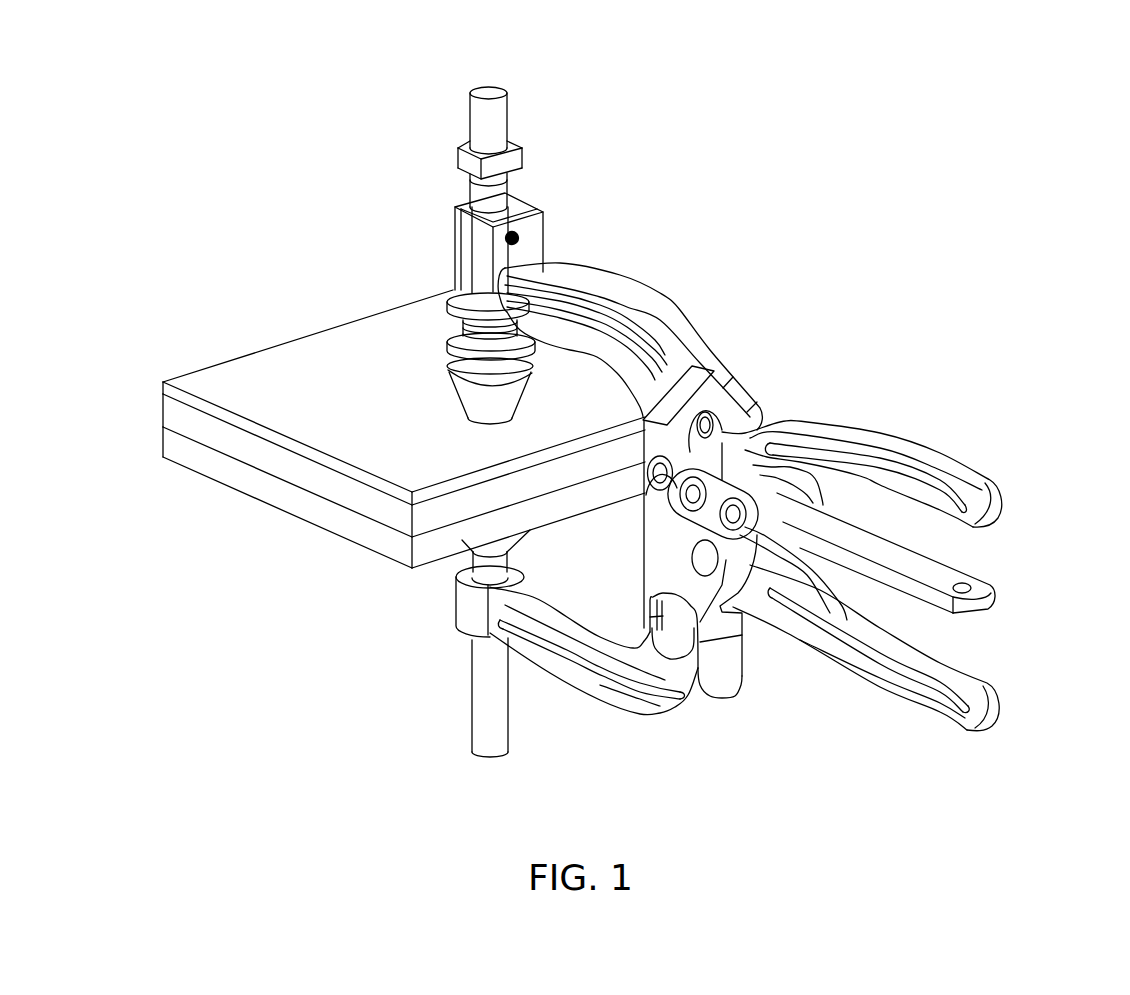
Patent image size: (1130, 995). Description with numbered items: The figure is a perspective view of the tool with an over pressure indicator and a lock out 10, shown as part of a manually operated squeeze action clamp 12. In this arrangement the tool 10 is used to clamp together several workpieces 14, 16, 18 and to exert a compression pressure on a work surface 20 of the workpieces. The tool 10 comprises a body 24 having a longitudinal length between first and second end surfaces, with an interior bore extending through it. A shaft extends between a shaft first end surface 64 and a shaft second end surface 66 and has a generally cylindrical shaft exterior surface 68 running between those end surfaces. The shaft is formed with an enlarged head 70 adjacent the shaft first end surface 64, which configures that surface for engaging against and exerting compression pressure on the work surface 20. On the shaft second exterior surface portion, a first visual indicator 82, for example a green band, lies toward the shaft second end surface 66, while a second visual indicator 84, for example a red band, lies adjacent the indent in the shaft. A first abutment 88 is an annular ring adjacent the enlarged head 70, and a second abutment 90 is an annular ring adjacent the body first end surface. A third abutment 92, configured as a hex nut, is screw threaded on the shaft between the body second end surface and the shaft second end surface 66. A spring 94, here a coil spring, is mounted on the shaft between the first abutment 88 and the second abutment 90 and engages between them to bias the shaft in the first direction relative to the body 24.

The tool with an over pressure indicator and a lock out 10 is at (506, 78).
The manually operated squeeze action clamp 12 is at (1010, 690).
The workpiece 14 is at (172, 390).
The workpiece 16 is at (183, 415).
The workpiece 18 is at (172, 443).
The work surface 20 is at (213, 380).
The body 24 is at (535, 247).
The shaft first end surface 64 is at (478, 425).
The shaft second end surface 66 is at (487, 92).
The shaft exterior surface 68 is at (503, 123).
The enlarged head 70 is at (463, 395).
The first visual indicator 82 is at (503, 190).
The second visual indicator 84 is at (510, 205).
The first abutment 88 is at (450, 337).
The second abutment 90 is at (450, 298).
The third abutment 92 is at (468, 142).
The spring 94 is at (537, 347).